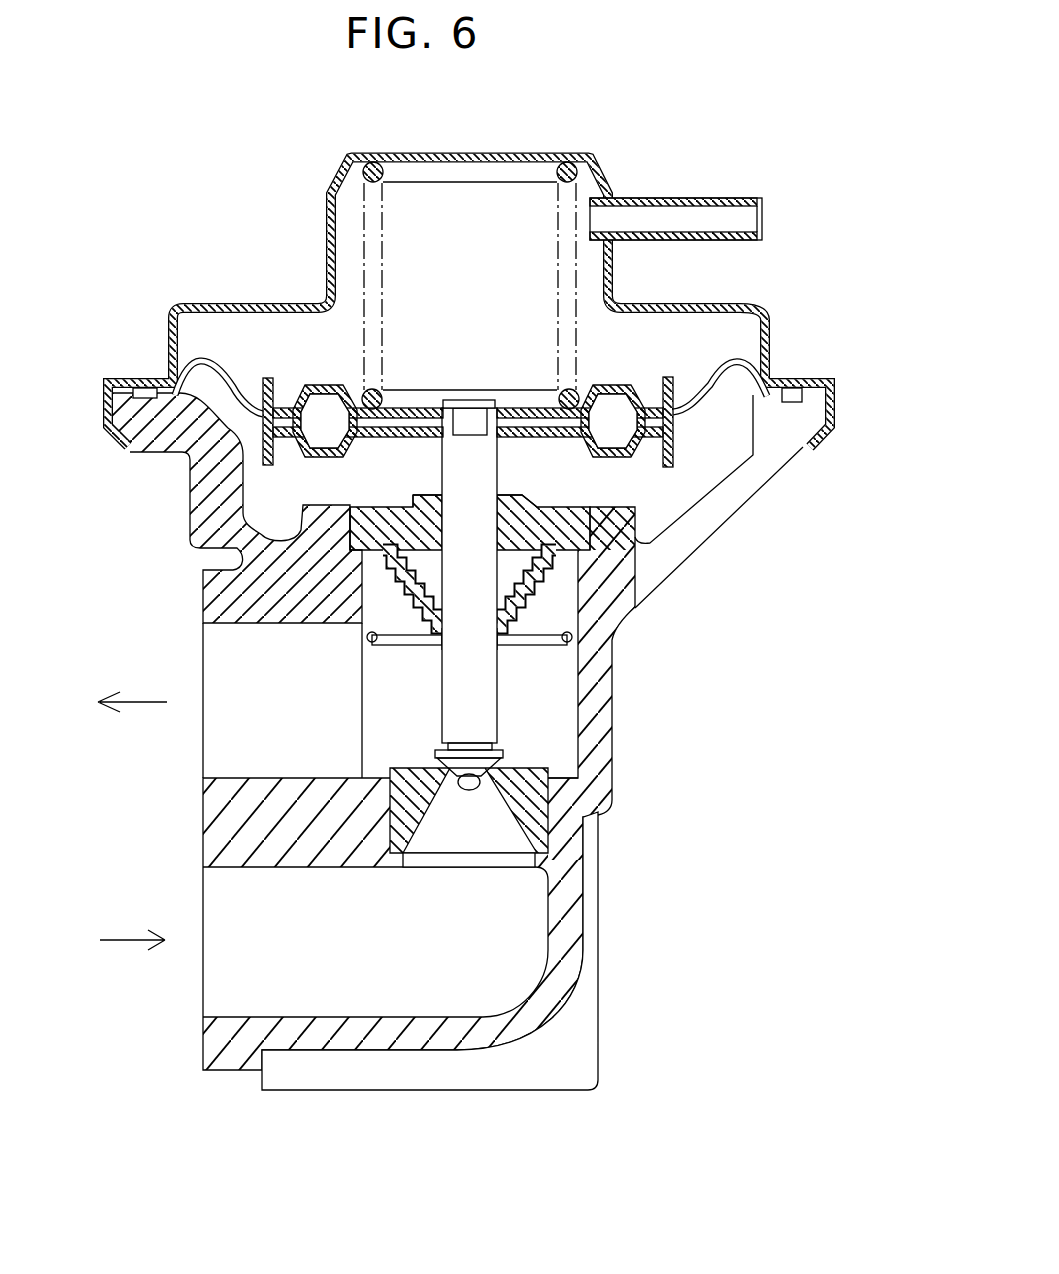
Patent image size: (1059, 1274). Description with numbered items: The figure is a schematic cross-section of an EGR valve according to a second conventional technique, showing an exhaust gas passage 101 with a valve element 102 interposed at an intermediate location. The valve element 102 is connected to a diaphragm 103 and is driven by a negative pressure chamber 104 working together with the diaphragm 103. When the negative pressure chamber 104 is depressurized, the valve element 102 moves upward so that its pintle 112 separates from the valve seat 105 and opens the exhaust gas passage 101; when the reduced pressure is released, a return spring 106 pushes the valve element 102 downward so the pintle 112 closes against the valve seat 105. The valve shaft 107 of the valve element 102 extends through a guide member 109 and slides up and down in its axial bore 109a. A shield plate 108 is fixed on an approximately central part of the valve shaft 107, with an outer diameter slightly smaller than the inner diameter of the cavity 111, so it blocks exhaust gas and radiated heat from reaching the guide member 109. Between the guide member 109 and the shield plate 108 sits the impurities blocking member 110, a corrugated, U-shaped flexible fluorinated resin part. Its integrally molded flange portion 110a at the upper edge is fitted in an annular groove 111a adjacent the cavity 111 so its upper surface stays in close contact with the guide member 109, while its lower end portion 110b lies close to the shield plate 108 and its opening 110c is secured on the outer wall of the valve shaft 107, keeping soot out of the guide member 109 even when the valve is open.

The exhaust gas passage 101 is at (225, 735).
The valve element 102 is at (522, 731).
The diaphragm 103 is at (190, 366).
The negative pressure chamber 104 is at (492, 293).
The valve seat 105 is at (540, 835).
The return spring 106 is at (597, 160).
The valve shaft 107 is at (500, 700).
The shield plate 108 is at (483, 635).
The guide member 109 is at (637, 538).
The axial bore 109a is at (497, 505).
The impurities blocking member 110 is at (578, 612).
The flange portion 110a is at (388, 525).
The lower end portion 110b is at (377, 637).
The opening 110c is at (565, 637).
The cavity 111 is at (362, 607).
The annular groove 111a is at (387, 515).
The pintle 112 is at (555, 785).